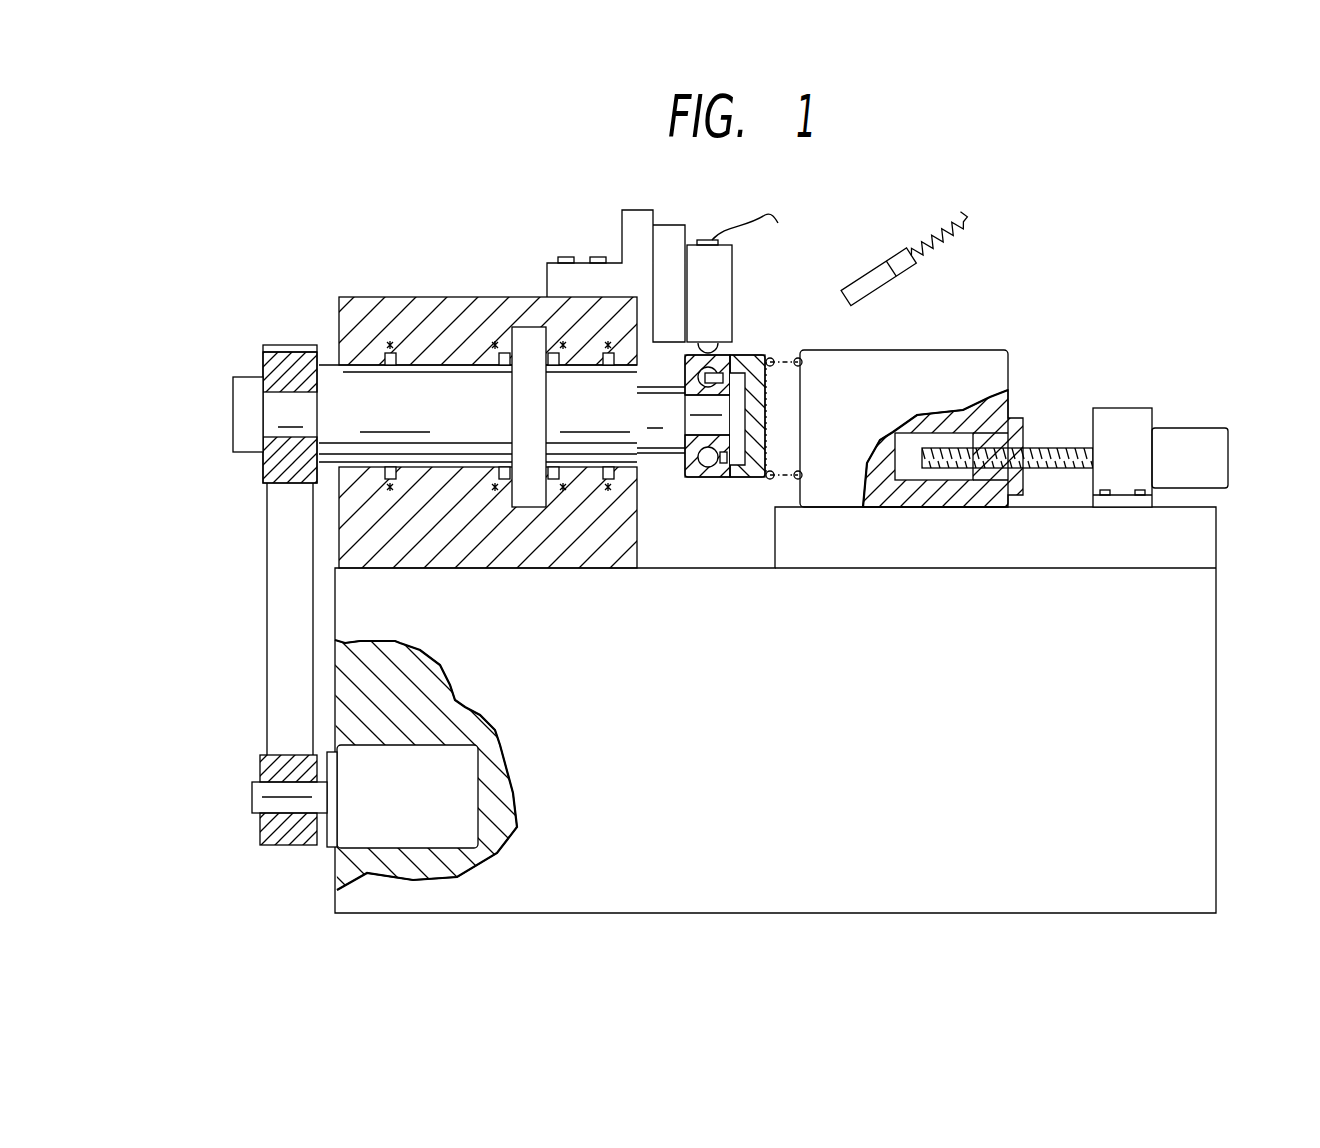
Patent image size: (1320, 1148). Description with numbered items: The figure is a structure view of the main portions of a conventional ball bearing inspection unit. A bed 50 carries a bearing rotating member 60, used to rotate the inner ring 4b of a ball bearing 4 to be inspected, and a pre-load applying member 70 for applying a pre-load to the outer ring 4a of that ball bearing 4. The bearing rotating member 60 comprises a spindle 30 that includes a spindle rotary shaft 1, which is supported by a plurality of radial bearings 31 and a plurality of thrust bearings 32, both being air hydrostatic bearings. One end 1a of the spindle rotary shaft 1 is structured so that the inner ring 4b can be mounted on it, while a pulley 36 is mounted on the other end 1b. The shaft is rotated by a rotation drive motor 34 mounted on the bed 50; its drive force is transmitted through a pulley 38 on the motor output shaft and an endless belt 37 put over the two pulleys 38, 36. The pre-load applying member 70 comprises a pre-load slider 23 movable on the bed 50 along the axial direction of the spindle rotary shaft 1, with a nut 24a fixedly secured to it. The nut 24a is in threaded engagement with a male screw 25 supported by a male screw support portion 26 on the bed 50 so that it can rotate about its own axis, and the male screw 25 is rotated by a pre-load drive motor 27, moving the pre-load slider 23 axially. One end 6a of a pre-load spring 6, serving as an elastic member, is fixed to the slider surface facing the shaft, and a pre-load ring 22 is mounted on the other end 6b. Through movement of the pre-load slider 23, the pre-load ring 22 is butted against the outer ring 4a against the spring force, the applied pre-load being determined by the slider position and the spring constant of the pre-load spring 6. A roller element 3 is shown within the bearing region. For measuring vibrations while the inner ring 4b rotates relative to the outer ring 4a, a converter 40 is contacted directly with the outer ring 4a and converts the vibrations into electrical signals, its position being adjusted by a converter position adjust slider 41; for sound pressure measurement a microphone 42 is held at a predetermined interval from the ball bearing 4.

The spindle rotary shaft 1 is at (355, 368).
The one end of the spindle rotary shaft 1a is at (733, 430).
The other end of the spindle rotary shaft 1b is at (285, 450).
The roller 3 is at (700, 463).
The ball bearing 4 is at (683, 480).
The outer ring 4a is at (712, 480).
The inner ring 4b is at (696, 390).
The pre-load spring 6 is at (785, 358).
The one end of the pre-load spring 6a is at (800, 360).
The other end of the pre-load spring 6b is at (770, 358).
The pre-load ring 22 is at (753, 480).
The pre-load slider 23 is at (935, 350).
The nut 24a is at (990, 410).
The male screw 25 is at (1050, 448).
The male screw support portion 26 is at (1127, 412).
The pre-load drive motor 27 is at (1198, 430).
The spindle 30 is at (450, 300).
The radial bearings 31 is at (390, 349).
The thrust bearings 32 is at (497, 349).
The rotation drive motor 34 is at (423, 835).
The pulley 36 is at (270, 368).
The endless belt 37 is at (270, 580).
The pulley 38 is at (262, 820).
The converter 40 is at (733, 290).
The converter position adjust slider 41 is at (662, 225).
The microphone 42 is at (876, 264).
The bed 50 is at (1218, 670).
The bearing rotating member 60 is at (523, 268).
The pre-load applying member 70 is at (905, 319).